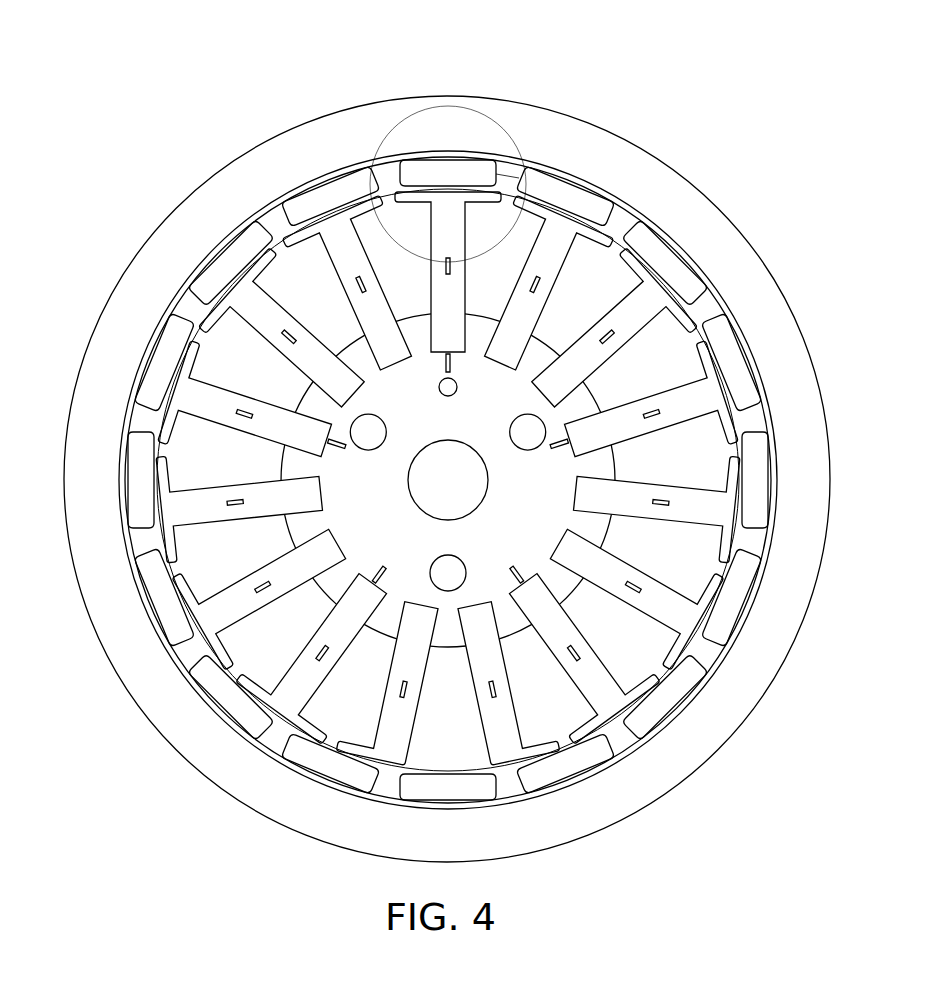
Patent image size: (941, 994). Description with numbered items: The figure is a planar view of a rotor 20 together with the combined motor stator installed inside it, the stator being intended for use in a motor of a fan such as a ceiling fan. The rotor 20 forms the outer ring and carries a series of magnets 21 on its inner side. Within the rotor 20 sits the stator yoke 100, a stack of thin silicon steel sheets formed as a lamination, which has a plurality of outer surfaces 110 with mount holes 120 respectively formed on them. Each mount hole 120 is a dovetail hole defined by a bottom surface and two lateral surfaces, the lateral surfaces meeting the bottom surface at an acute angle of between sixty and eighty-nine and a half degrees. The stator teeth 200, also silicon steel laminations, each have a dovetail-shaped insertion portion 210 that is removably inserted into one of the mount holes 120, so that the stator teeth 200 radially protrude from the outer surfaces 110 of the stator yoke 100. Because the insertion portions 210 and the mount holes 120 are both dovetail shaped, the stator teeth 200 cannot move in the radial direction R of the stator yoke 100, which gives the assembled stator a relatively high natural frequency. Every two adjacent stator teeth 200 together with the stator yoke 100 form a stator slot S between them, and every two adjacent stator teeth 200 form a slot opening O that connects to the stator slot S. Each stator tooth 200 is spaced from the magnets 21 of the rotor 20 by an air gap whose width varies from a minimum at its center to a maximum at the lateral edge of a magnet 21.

The rotor 20 is at (488, 148).
The magnet 21 is at (330, 195).
The stator tooth 200 is at (390, 172).
The stator yoke 100 is at (520, 545).
The outer surface 110 is at (578, 428).
The mount hole 120 is at (598, 503).
The insertion portion 210 is at (575, 385).
The radial direction R is at (445, 36).
The slot opening O is at (625, 234).
The stator slot S is at (610, 276).